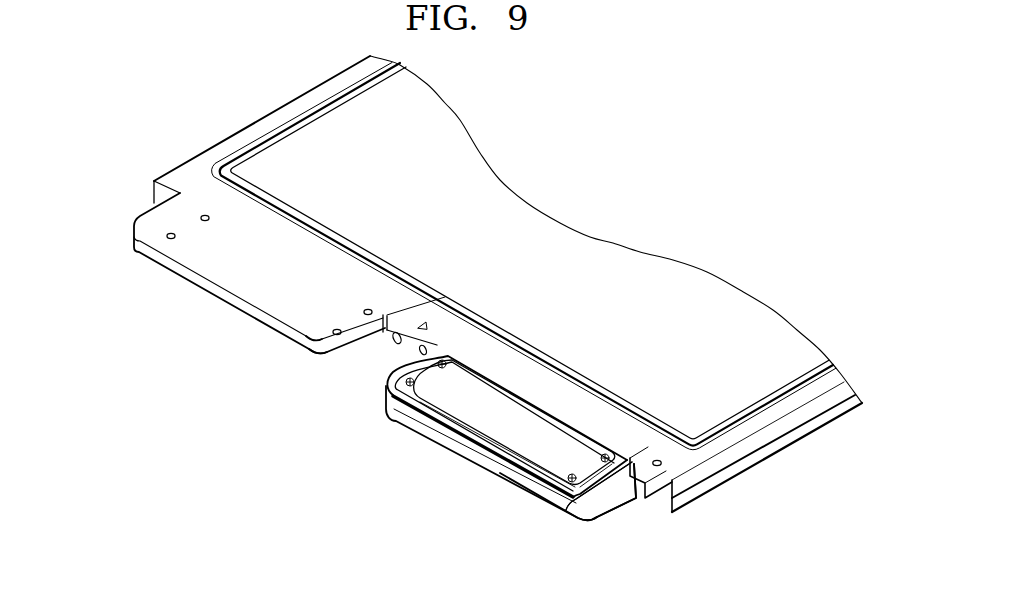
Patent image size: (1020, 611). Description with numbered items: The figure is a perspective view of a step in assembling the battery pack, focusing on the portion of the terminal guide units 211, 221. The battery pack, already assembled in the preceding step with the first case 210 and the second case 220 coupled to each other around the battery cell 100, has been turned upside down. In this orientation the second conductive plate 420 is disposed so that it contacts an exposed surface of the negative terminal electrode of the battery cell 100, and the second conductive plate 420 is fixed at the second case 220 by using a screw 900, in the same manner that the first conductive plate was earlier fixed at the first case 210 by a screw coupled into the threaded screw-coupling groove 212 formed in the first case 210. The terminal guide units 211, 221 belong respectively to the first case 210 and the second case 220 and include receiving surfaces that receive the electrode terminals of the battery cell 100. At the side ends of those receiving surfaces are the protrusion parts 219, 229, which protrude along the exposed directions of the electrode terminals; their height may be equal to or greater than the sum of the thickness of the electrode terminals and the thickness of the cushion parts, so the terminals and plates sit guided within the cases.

The battery cell 100 is at (611, 265).
The first case 210 is at (820, 403).
The second case 220 is at (771, 449).
The terminal guide unit 211 is at (258, 287).
The screw-coupling groove 212 is at (167, 235).
The protrusion part 219 is at (345, 358).
The screw 900 is at (389, 380).
The second conductive plate 420 is at (503, 424).
The protrusion part 229 is at (615, 475).
The terminal guide unit 221 is at (593, 517).